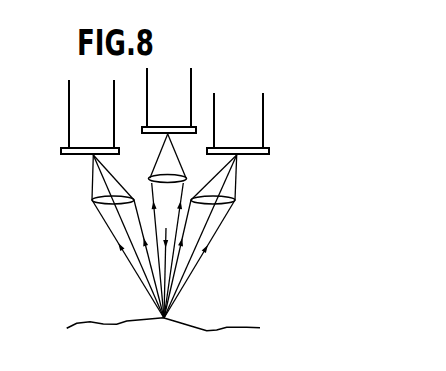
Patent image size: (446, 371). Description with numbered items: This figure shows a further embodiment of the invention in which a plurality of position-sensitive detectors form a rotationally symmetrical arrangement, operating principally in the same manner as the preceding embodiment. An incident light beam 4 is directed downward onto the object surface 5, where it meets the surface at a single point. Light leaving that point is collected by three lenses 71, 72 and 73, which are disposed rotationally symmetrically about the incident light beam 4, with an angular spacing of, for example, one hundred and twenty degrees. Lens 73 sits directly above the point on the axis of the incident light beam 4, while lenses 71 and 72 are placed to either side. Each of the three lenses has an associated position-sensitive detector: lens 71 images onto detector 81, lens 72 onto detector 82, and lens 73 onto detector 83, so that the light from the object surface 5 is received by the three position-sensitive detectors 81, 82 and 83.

The incident light beam 4 is at (166, 228).
The object surface 5 is at (248, 327).
The lens 71 is at (91, 199).
The lens 72 is at (236, 202).
The lens 73 is at (165, 175).
The position-sensitive detector 81 is at (83, 148).
The position-sensitive detector 82 is at (230, 148).
The position-sensitive detector 83 is at (161, 127).